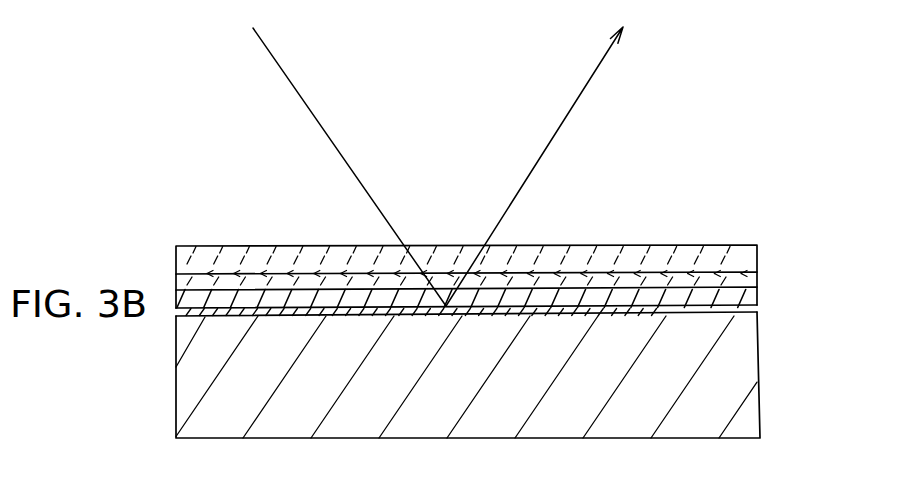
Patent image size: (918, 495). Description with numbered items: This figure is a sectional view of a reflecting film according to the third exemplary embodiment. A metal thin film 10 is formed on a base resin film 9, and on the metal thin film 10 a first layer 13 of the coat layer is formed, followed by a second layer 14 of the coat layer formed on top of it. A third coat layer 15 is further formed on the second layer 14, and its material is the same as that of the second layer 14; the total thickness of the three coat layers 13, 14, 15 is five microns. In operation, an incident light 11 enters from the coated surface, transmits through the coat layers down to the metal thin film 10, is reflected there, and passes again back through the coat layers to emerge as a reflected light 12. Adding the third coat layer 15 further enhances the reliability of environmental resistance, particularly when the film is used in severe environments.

The base resin film 9 is at (693, 438).
The metal thin film 10 is at (758, 313).
The incident light 11 is at (282, 70).
The reflected light 12 is at (582, 93).
The first layer of the coat layer 13 is at (758, 298).
The second layer of the coat layer 14 is at (758, 275).
The third coat layer 15 is at (713, 245).